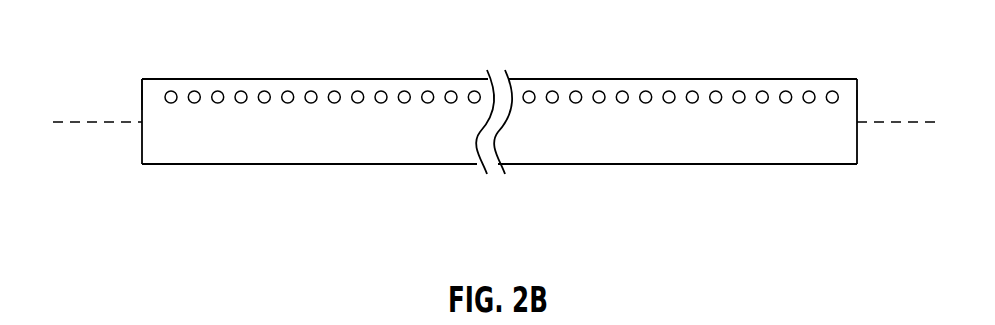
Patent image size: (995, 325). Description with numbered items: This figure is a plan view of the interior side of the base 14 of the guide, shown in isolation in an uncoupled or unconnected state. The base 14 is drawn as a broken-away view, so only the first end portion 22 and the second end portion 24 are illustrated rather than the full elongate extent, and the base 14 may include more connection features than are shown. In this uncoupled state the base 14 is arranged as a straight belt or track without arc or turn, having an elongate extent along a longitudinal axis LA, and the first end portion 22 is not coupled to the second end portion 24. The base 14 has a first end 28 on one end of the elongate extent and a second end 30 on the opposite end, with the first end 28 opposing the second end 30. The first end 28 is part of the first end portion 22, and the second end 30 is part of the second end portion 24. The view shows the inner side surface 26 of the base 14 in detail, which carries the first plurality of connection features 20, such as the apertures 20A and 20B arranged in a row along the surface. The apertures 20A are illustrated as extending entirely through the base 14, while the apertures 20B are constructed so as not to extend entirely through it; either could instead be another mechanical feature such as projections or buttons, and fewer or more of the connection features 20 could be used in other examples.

The base 14 is at (851, 63).
The first plurality of connection features 20 is at (501, 155).
The apertures 20A is at (325, 105).
The apertures 20B is at (718, 112).
The first end portion 22 is at (159, 60).
The second end portion 24 is at (758, 77).
The inner side surface 26 is at (610, 148).
The first end 28 is at (142, 97).
The second end 30 is at (857, 100).
The longitudinal axis LA is at (108, 121).